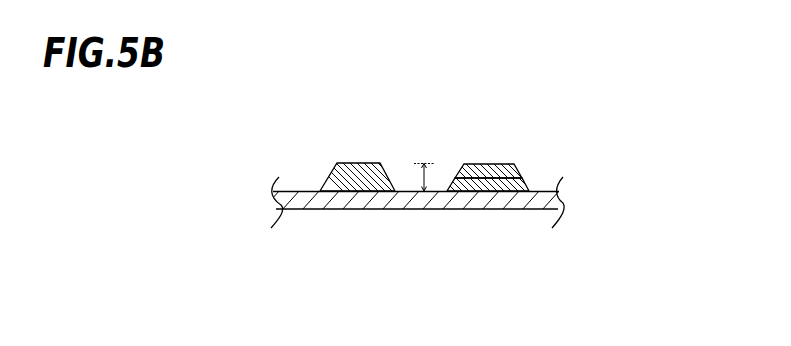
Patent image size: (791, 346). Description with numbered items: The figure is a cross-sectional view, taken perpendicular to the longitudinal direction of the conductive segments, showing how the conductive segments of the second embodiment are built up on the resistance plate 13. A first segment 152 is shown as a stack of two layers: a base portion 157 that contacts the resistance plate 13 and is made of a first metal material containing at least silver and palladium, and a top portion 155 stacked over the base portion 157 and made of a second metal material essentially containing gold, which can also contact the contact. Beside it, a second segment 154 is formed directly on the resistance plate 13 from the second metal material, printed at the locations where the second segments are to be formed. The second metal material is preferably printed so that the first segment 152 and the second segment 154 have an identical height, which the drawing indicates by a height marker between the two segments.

The resistance plate 13 is at (502, 210).
The second segments 154 is at (352, 163).
The first segments 152 is at (492, 139).
The top portions 155 is at (478, 164).
The base portions 157 is at (443, 119).